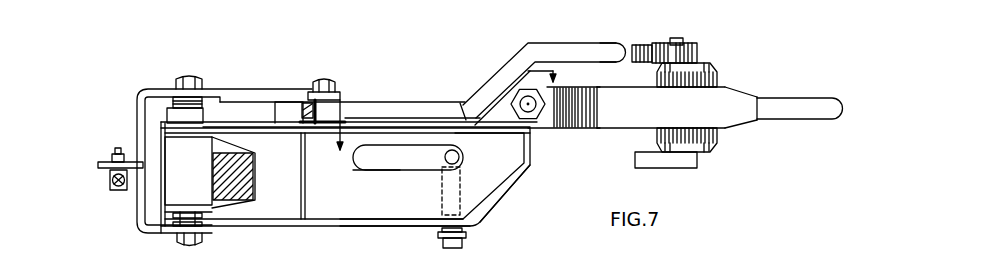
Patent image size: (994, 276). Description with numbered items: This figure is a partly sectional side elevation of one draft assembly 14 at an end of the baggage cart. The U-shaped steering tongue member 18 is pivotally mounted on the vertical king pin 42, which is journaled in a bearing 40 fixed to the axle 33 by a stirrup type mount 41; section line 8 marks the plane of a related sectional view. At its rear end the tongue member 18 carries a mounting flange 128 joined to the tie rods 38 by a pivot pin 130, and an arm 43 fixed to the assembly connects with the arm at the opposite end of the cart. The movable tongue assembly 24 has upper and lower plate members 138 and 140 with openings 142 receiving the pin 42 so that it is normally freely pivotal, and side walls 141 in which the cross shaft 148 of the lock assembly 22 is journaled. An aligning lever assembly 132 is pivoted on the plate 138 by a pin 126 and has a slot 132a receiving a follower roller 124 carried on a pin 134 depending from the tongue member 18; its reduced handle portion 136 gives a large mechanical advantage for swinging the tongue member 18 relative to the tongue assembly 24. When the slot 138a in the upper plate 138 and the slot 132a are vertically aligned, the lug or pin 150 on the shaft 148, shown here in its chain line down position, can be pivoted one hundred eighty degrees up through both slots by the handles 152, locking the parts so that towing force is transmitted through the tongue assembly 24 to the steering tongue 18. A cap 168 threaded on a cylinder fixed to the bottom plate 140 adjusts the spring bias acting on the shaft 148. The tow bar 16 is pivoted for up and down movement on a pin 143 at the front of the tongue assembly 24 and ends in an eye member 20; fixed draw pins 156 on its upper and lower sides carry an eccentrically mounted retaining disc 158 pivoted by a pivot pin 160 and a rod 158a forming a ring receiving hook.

The section line 8- 8 is at (451, 118).
The draft assembly 14 is at (471, 80).
The tow bar 16 is at (759, 124).
The steering tongue member 18 is at (138, 86).
The eye member 20 is at (828, 116).
The lock assembly 22 is at (469, 195).
The movable tongue assembly 24 is at (285, 230).
The axle 33 is at (245, 172).
The tie rod 38 is at (110, 182).
The bearing 40 is at (165, 193).
The stirrup type mount 41 is at (163, 222).
The king pin 42 is at (188, 103).
The arm 43 is at (205, 114).
The follower roller 124 is at (348, 108).
The pin 126 is at (285, 122).
The mounting flange 128 is at (102, 168).
The pivot pin 130 is at (117, 148).
The aligning lever assembly 132 is at (349, 74).
The slot 132a is at (463, 110).
The pin 134 is at (327, 92).
The handle portion 136 is at (541, 46).
The upper plate member 138 is at (258, 129).
The slot 138a is at (457, 134).
The lower plate member 140 is at (340, 226).
The side wall 141 is at (407, 208).
The opening 142 is at (165, 233).
The pin 143 is at (540, 108).
The cross shaft 148 is at (445, 161).
The lug or pin 150 is at (460, 183).
The handle 152 is at (372, 165).
The draw pin 156 is at (722, 77).
The retaining disc 158 is at (646, 44).
The rod 158a is at (658, 163).
The pivot pin 160 is at (676, 38).
The cap 168 is at (438, 243).